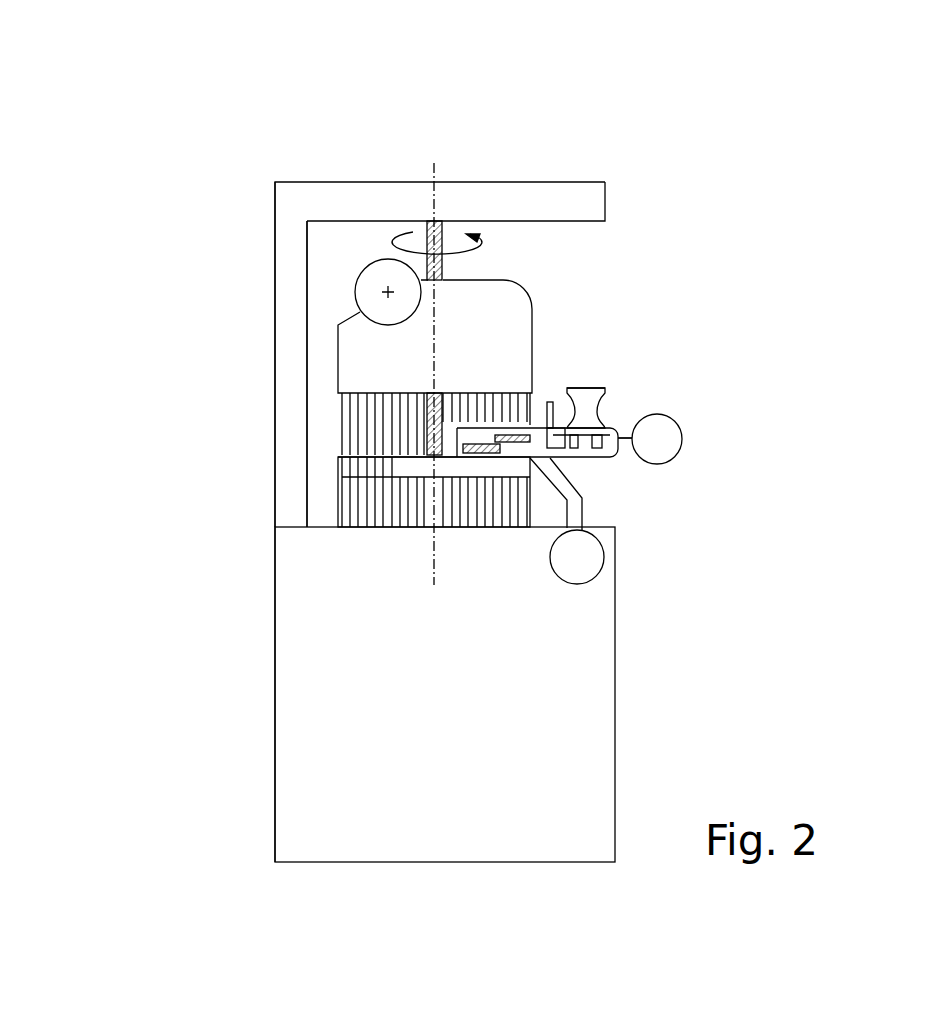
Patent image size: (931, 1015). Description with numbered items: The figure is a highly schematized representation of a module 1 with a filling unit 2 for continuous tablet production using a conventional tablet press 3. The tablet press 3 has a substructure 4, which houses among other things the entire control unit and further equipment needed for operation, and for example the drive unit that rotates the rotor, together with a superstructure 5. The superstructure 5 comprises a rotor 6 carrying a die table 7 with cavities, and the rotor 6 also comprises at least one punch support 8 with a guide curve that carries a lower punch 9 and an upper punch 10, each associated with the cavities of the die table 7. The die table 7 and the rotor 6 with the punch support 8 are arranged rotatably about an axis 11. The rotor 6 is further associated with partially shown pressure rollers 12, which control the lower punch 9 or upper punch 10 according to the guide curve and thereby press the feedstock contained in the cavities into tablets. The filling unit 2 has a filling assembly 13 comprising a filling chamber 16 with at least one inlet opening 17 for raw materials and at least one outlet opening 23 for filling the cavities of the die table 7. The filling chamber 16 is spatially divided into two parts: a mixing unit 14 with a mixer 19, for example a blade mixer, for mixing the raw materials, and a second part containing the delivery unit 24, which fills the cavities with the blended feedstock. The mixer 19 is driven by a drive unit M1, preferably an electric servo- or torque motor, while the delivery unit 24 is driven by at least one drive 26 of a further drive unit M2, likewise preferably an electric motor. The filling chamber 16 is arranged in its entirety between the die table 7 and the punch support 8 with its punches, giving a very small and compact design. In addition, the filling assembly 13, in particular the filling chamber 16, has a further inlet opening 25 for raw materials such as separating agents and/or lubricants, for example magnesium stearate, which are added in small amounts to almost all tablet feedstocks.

The module 1 is at (268, 130).
The filling unit 2 is at (640, 378).
The tablet press 3 is at (208, 827).
The substructure 4 is at (264, 660).
The superstructure 5 is at (180, 413).
The rotor 6 is at (322, 430).
The die table 7 is at (338, 472).
The punch support 8 is at (360, 337).
The lower punch 9 is at (342, 507).
The upper punch 10 is at (342, 405).
The axis 11 is at (436, 172).
The pressure rollers 12 is at (372, 268).
The filling assembly 13 is at (685, 468).
The mixing unit 14 is at (594, 479).
The filling chamber 16 is at (617, 410).
The inlet opening 17 is at (593, 386).
The mixer 19 is at (583, 455).
The outlet opening 23 is at (485, 453).
The delivery unit 24 is at (503, 437).
The further inlet opening 25 is at (549, 402).
The drive 26 is at (580, 511).
The drive unit M1 is at (682, 437).
The further drive unit M2 is at (604, 557).